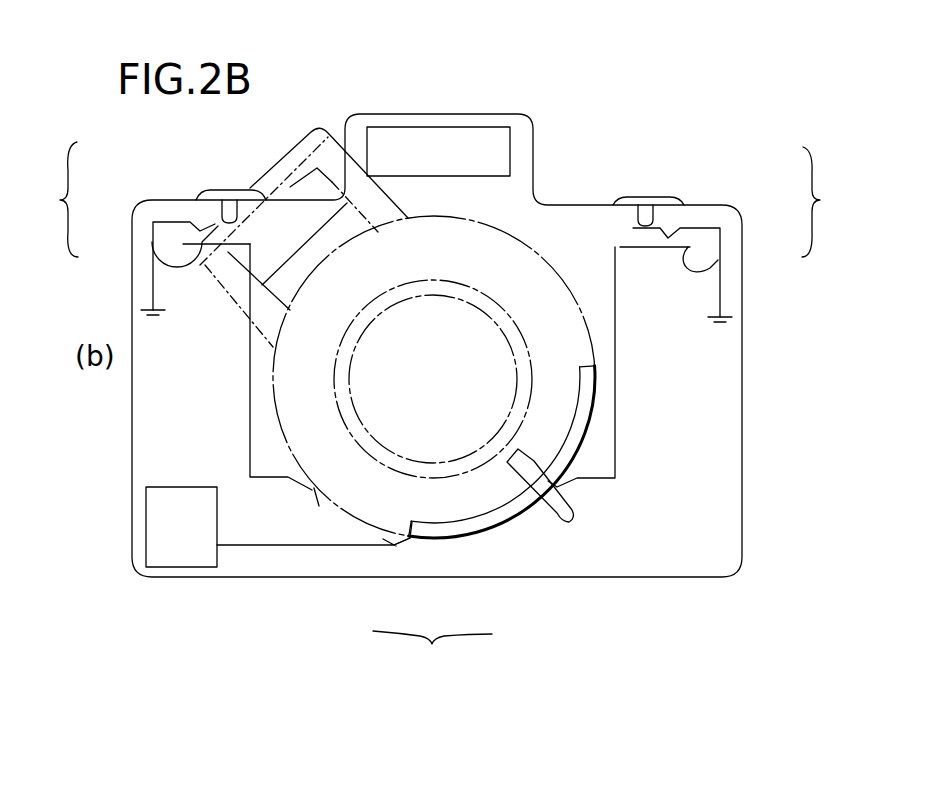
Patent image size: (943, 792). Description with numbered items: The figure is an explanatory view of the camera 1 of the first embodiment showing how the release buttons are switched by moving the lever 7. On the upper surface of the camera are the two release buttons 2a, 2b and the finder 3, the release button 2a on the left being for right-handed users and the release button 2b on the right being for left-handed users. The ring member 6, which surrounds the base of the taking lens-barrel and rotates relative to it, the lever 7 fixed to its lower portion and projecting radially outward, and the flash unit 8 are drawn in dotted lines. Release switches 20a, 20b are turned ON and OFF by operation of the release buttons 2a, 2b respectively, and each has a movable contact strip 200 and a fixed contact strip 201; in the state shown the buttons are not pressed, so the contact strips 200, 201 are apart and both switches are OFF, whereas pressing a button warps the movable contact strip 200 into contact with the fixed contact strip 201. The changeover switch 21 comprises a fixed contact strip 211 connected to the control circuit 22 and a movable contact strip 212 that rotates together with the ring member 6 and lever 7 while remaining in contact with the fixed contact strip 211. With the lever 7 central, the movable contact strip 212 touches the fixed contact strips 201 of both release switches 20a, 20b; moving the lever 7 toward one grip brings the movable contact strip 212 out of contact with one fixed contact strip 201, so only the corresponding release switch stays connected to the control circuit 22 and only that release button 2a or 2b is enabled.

The camera 1 is at (550, 164).
The release button 2a is at (212, 188).
The release button 2b is at (648, 197).
The finder 3 is at (493, 146).
The ring member 6 is at (538, 252).
The lever 7 is at (557, 522).
The flash unit 8 is at (303, 190).
The release switch 20a is at (43, 199).
The release switch 20b is at (837, 202).
The movable contact strip 200 is at (174, 228).
The fixed contact strip 201 is at (152, 242).
The changeover switch 21 is at (432, 660).
The fixed contact strip 211 is at (396, 548).
The movable contact strip 212 is at (458, 530).
The control circuit 22 is at (165, 490).